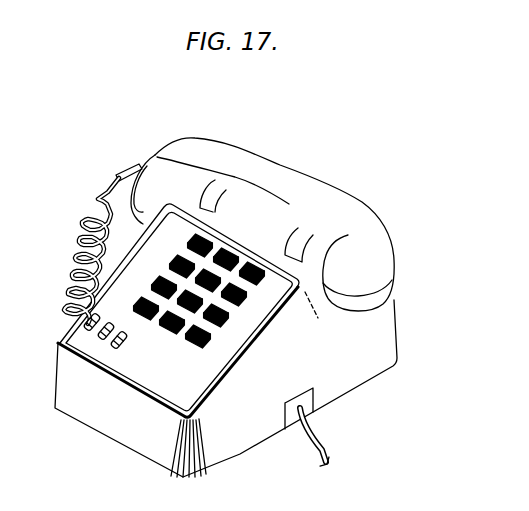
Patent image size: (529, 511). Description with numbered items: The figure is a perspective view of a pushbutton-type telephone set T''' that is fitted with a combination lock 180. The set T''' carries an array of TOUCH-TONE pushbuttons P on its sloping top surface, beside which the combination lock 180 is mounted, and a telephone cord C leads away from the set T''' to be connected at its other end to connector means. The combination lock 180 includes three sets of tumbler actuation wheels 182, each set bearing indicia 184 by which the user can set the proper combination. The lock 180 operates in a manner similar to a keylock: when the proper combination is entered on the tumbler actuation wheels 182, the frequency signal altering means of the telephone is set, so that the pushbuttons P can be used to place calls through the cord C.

The combination lock 180 is at (95, 348).
The tumbler actuation wheels 182 is at (112, 326).
The indicia 184 is at (121, 344).
The telephone set T''' is at (255, 197).
The pushbuttons P is at (206, 353).
The telephone cord C is at (318, 450).